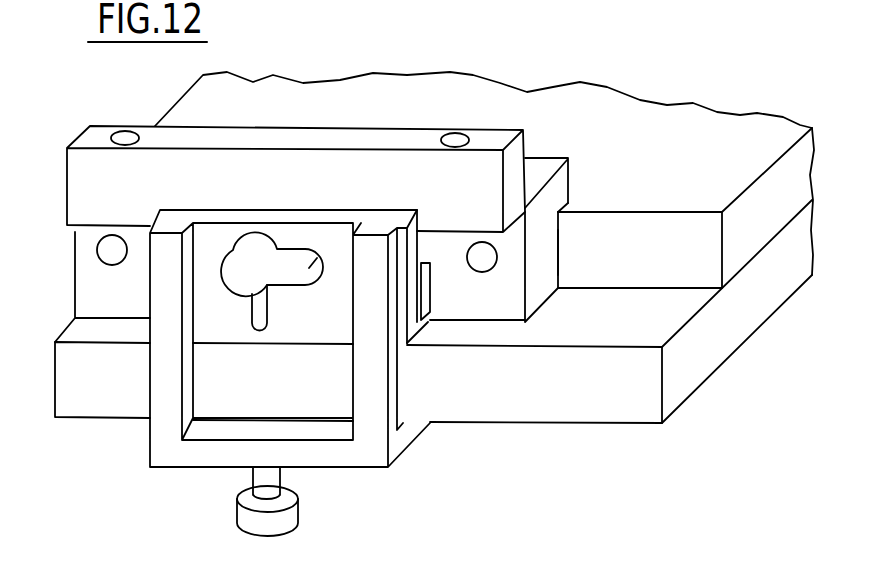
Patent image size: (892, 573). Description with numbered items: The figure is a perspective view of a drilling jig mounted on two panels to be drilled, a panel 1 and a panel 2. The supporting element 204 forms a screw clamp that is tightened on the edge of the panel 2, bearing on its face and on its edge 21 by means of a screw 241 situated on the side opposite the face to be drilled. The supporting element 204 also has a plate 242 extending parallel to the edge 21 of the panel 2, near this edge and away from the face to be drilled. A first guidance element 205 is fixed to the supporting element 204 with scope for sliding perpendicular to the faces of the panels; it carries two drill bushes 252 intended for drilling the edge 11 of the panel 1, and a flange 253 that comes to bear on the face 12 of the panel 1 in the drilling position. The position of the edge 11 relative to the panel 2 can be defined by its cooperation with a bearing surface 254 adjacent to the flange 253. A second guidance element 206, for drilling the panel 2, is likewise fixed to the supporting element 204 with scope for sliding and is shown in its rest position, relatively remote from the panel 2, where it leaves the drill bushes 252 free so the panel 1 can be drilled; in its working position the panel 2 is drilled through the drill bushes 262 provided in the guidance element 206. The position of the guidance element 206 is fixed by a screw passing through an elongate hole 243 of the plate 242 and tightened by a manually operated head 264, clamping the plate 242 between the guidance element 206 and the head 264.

The panel 1 is at (484, 172).
The edge of panel 1 11 is at (690, 270).
The face of panel 1 12 is at (696, 165).
The panel 2 is at (433, 311).
The edge of panel 2 21 is at (580, 400).
The supporting element 204 is at (263, 357).
The guidance element 205 is at (348, 218).
The guidance element 206 is at (288, 149).
The screw 241 is at (298, 513).
The plate 242 is at (273, 296).
The elongate hole 243 is at (265, 316).
The drill bushes 252 is at (103, 256).
The flange 253 is at (574, 207).
The bearing surface 254 is at (559, 255).
The drill bushes 262 is at (127, 134).
The manually operated head 264 is at (262, 242).